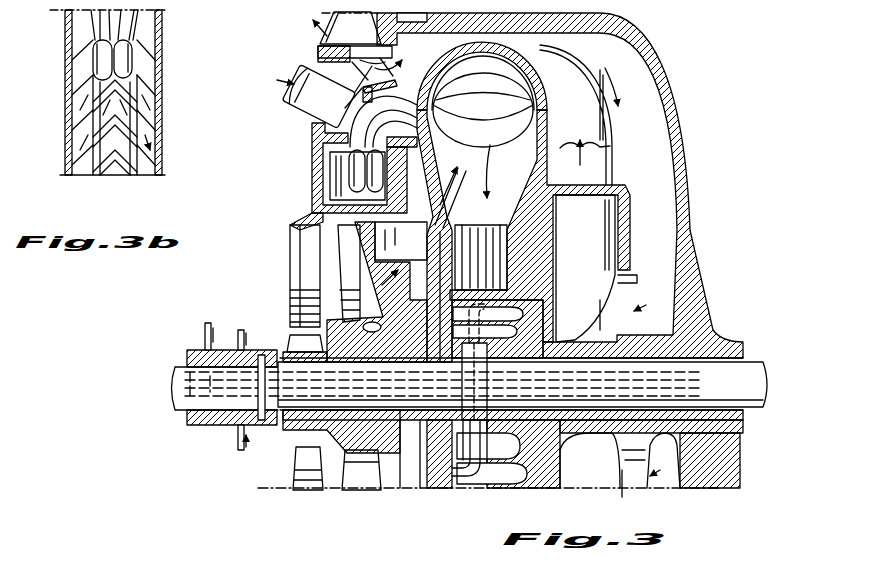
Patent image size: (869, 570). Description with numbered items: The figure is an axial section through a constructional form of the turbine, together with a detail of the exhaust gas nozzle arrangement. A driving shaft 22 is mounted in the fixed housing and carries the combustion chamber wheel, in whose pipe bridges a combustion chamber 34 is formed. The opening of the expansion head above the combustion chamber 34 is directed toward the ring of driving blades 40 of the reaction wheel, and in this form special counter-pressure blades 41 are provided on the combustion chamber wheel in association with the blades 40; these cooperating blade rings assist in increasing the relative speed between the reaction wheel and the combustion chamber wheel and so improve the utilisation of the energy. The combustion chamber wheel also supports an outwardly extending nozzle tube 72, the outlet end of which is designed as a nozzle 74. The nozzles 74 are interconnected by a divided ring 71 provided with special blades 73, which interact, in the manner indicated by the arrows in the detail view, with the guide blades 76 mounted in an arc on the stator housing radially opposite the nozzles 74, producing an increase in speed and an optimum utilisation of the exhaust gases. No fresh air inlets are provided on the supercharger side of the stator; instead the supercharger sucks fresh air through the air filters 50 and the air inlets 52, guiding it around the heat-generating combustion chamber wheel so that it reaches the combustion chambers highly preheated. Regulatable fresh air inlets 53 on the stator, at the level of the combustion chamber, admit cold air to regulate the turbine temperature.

In FIG. 3, the driving shaft 22 is at (600, 390).
In FIG. 3, the combustion chamber 34 is at (511, 168).
In FIG. 3, the driving blades of reaction wheel 40 is at (498, 257).
In FIG. 3, the counter-pressure blades 41 is at (518, 238).
In FIG. 3, the air filters 50 is at (314, 271).
In FIG. 3, the air inlets 52 is at (381, 327).
In FIG. 3, the regulatable fresh air inlets 53 is at (322, 50).
In FIG. 3B, the divided ring 71 is at (97, 78).
In FIG. 3, the nozzle tube 72 is at (415, 118).
In FIG. 3B, the special blades 73 is at (117, 168).
In FIG. 3, the special blades 73 is at (360, 182).
In FIG. 3B, the nozzles 74 is at (133, 52).
In FIG. 3, the nozzles 74 is at (350, 171).
In FIG. 3B, the guide blades 76 is at (77, 168).
In FIG. 3, the guide blades 76 is at (327, 153).